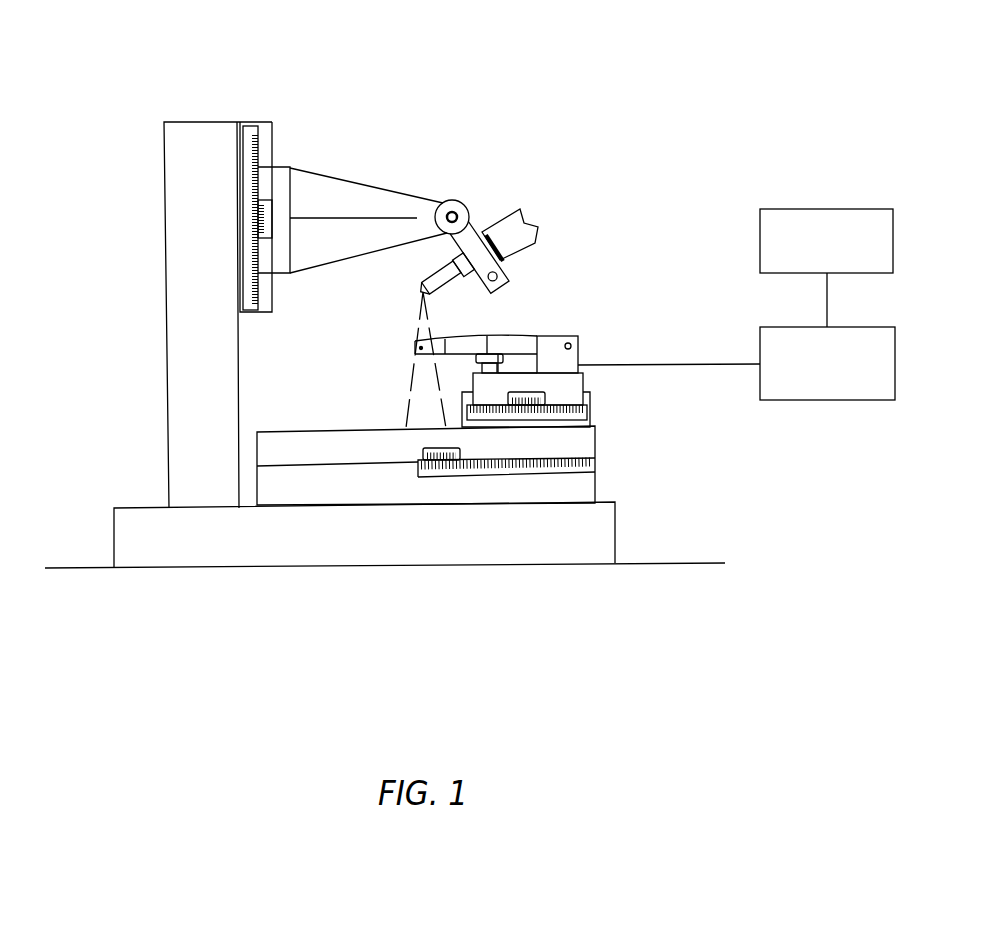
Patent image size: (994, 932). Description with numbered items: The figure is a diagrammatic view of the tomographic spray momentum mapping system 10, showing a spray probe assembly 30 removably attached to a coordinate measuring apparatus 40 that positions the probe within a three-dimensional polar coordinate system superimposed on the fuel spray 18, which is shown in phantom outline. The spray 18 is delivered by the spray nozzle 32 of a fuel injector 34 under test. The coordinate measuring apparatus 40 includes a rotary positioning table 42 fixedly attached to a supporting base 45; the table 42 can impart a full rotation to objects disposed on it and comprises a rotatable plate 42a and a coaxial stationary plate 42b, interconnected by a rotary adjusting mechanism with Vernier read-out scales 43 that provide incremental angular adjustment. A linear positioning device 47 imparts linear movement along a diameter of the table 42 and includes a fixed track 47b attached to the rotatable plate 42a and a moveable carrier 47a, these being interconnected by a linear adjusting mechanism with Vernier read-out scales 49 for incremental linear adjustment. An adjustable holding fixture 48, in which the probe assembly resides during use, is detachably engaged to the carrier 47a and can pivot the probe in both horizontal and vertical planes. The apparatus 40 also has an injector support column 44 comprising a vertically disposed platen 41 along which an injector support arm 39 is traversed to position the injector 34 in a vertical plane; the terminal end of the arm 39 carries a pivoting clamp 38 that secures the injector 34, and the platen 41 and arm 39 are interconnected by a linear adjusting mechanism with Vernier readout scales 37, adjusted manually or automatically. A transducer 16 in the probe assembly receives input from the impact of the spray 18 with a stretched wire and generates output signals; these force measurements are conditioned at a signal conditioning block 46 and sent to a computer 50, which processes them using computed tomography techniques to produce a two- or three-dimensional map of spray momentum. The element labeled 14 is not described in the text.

The tomographic spray momentum mapping system 10 is at (448, 100).
The sample 14 is at (516, 330).
The transducer 16 is at (507, 358).
The fuel spray 18 is at (408, 395).
The spray probe assembly 30 is at (413, 327).
The spray nozzle 32 is at (428, 278).
The fuel injector 34 is at (534, 221).
The Vernier readout scales 37 is at (258, 235).
The pivoting clamp 38 is at (463, 206).
The injector support arm 39 is at (284, 177).
The coordinate measuring apparatus 40 is at (127, 310).
The vertically disposed platen 41 is at (180, 442).
The rotary positioning table 42 is at (582, 440).
The rotatable plate 42a is at (345, 452).
The stationary plate 42b is at (270, 488).
The Vernier read-out scales 43 is at (542, 467).
The injector support column 44 is at (198, 104).
The supporting base 45 is at (493, 537).
The signal conditioning block 46 is at (832, 395).
The linear positioning device 47 is at (567, 397).
The moveable carrier 47a is at (572, 383).
The fixed track 47b is at (590, 400).
The adjustable holding fixture 48 is at (568, 357).
The Vernier read-out scales 49 is at (543, 418).
The computer 50 is at (790, 220).